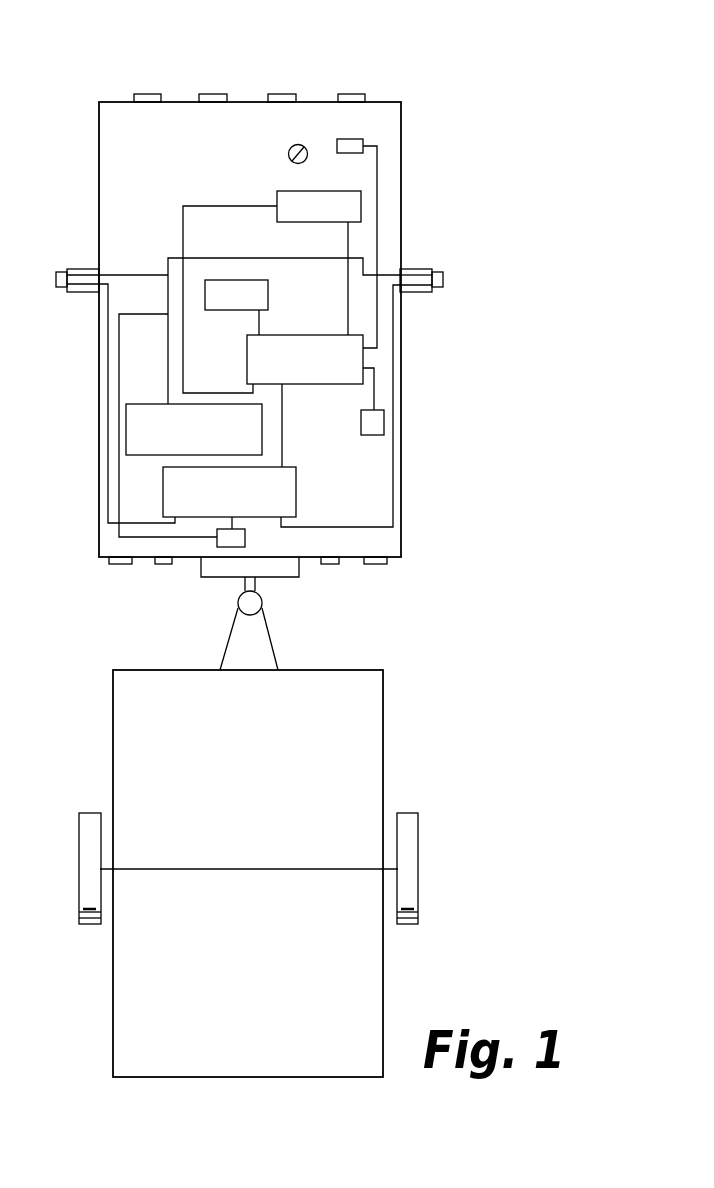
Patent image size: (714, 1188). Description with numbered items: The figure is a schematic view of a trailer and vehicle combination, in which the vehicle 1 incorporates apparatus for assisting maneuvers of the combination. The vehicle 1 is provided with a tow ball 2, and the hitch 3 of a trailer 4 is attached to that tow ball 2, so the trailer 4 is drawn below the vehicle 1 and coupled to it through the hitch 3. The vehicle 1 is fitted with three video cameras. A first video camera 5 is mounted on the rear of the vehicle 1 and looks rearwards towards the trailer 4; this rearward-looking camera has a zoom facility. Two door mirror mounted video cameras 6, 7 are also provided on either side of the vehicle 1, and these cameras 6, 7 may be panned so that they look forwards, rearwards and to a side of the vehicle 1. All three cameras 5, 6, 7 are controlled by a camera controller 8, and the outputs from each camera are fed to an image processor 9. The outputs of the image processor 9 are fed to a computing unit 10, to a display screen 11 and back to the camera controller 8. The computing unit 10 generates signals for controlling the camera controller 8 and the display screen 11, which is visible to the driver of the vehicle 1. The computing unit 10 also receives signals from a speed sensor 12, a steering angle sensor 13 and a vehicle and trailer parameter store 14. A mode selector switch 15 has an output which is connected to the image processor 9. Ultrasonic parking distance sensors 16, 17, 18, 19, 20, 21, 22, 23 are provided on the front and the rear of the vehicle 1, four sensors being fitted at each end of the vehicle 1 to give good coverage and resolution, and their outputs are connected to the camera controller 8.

The vehicle 1 is at (99, 163).
The tow ball 2 is at (263, 598).
The hitch 3 is at (275, 650).
The trailer 4 is at (384, 717).
The first video camera 5 is at (245, 537).
The door mirror mounted video camera 6 is at (60, 282).
The door mirror mounted video camera 7 is at (442, 277).
The camera controller 8 is at (152, 404).
The image processor 9 is at (297, 479).
The computing unit 10 is at (330, 384).
The display screen 11 is at (310, 223).
The speed sensor 12 is at (384, 430).
The steering angle sensor 13 is at (352, 139).
The vehicle and trailer parameter store 14 is at (268, 292).
The mode selector switch 15 is at (292, 147).
The ultrasonic parking distance sensor 16 is at (146, 94).
The ultrasonic parking distance sensor 17 is at (212, 94).
The ultrasonic parking distance sensor 18 is at (283, 94).
The ultrasonic parking distance sensor 19 is at (353, 94).
The ultrasonic parking distance sensor 20 is at (120, 564).
The ultrasonic parking distance sensor 21 is at (165, 564).
The ultrasonic parking distance sensor 22 is at (332, 564).
The ultrasonic parking distance sensor 23 is at (384, 564).